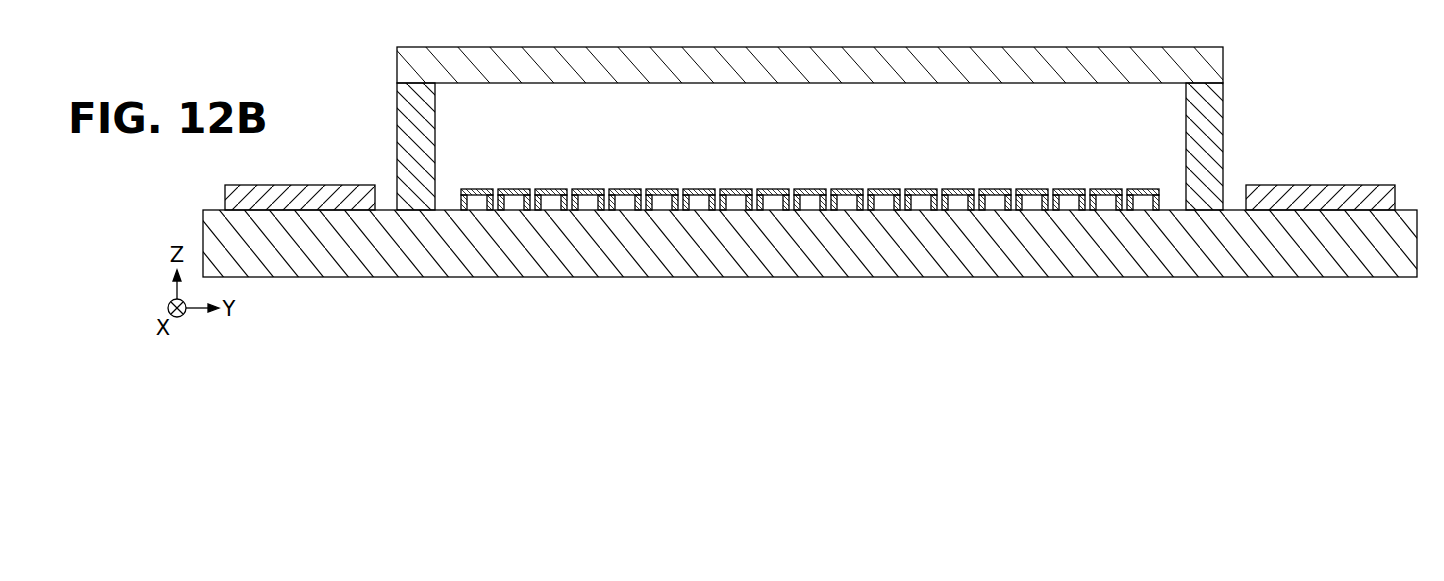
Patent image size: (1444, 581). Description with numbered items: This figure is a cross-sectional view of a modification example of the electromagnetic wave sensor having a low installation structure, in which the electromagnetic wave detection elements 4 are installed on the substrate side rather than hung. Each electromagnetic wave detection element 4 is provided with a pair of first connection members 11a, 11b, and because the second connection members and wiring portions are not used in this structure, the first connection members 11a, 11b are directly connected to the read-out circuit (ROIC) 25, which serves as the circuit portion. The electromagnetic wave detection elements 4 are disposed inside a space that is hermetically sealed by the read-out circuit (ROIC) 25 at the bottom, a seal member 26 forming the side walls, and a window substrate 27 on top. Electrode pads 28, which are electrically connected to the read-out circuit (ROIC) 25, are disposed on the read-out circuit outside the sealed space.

The electromagnetic wave detection element 4 is at (810, 154).
The first connection member 11a is at (796, 189).
The first connection member 11b is at (750, 189).
The read-out circuit (ROIC) 25 is at (1405, 212).
The seal member 26 is at (418, 133).
The window substrate 27 is at (888, 62).
The electrode pad 28 is at (297, 188).